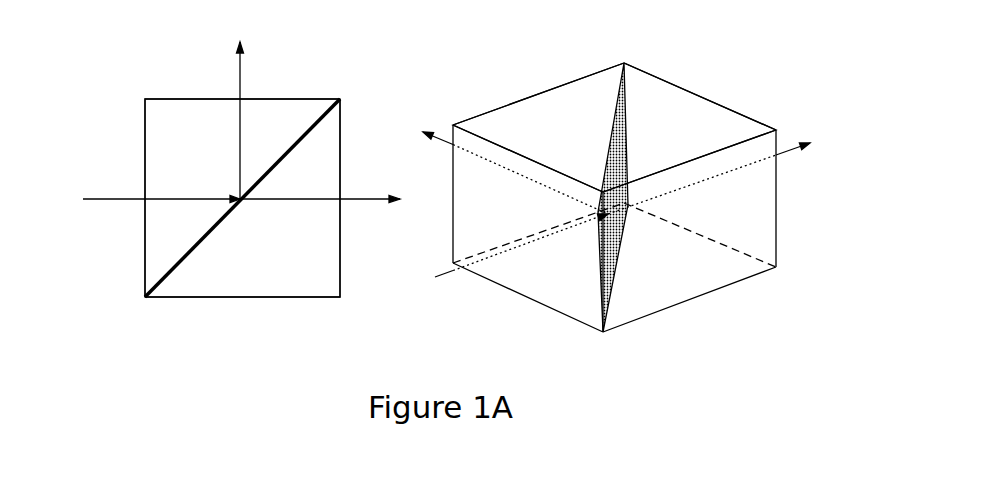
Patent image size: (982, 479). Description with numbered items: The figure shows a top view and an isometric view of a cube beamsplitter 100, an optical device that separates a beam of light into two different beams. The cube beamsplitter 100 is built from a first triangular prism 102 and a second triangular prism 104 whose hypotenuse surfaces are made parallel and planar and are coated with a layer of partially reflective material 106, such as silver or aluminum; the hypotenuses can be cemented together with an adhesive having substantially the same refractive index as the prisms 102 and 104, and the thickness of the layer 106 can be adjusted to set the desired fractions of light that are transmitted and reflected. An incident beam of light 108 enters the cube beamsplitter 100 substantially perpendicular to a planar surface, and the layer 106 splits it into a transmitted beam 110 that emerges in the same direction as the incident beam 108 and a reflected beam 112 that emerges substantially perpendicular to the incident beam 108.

The cube beamsplitter 100 is at (364, 51).
The first triangular prism 102 is at (201, 131).
The second triangular prism 104 is at (321, 281).
The layer of partially reflective material 106 is at (325, 117).
The incident beam of light 108 is at (113, 203).
The transmitted beam 110 is at (377, 203).
The reflected beam 112 is at (243, 73).